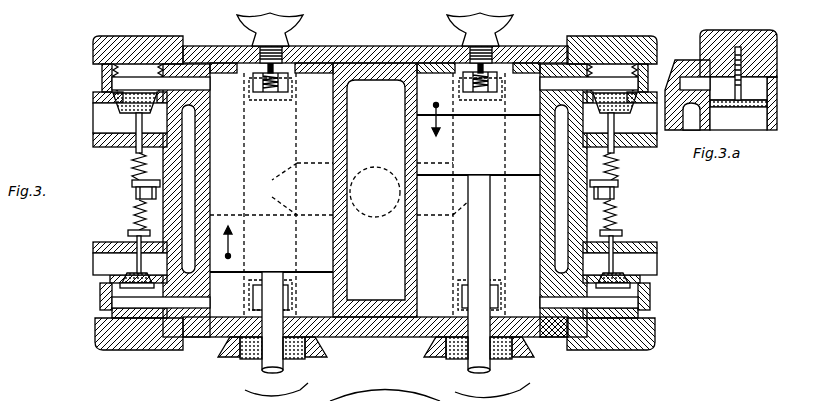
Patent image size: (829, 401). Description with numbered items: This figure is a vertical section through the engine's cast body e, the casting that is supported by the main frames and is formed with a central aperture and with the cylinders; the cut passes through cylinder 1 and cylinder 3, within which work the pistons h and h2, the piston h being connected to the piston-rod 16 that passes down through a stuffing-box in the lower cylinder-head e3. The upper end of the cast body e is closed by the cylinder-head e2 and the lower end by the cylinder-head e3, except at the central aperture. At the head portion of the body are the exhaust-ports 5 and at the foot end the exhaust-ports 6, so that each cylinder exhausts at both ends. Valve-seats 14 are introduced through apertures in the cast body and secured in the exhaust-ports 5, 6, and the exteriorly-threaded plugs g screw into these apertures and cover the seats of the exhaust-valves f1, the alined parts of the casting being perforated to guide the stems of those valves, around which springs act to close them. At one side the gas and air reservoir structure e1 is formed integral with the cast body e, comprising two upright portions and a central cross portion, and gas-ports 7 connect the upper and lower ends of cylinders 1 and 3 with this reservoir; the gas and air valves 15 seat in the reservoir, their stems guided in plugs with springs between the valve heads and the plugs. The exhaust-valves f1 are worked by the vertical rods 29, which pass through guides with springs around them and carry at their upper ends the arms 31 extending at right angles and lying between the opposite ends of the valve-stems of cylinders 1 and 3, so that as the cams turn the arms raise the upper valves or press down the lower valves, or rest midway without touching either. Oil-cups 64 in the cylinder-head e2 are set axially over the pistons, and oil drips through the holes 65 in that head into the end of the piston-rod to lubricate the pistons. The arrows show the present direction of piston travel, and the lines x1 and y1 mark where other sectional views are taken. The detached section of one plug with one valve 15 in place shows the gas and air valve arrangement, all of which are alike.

In FIG. 3, the plug g is at (143, 36).
In FIG. 3A, the plug g is at (750, 30).
In FIG. 3, the upper cylinder-head e2 is at (376, 46).
In FIG. 3, the lower cylinder-head e3 is at (402, 338).
In FIG. 3, the cast body e is at (132, 165).
In FIG. 3, the gas and air reservoir structure e1 is at (296, 150).
In FIG. 3A, the gas and air reservoir structure e1 is at (780, 115).
In FIG. 3, the section line x' x' x1 is at (666, 60).
In FIG. 3, the section line y' y' y1 is at (692, 296).
In FIG. 3, the upper exhaust-port 5 is at (196, 86).
In FIG. 3, the lower exhaust-port 6 is at (196, 300).
In FIG. 3, the gas-port 7 is at (283, 87).
In FIG. 3A, the gas-port 7 is at (695, 83).
In FIG. 3, the valve-seat 14 is at (116, 110).
In FIG. 3, the exhaust-valve f1 is at (612, 285).
In FIG. 3, the arm 31 is at (132, 184).
In FIG. 3, the vertical rod 29 is at (133, 222).
In FIG. 3, the piston h is at (271, 195).
In FIG. 3, the piston h2 is at (478, 195).
In FIG. 3, the cylinder 1 is at (256, 129).
In FIG. 3, the cylinder 3 is at (519, 215).
In FIG. 3A, the cylinder 3 is at (738, 118).
In FIG. 3, the gas and air valve 15 is at (270, 95).
In FIG. 3A, the gas and air valve 15 is at (745, 87).
In FIG. 3, the piston-rod 16 is at (376, 274).
In FIG. 3, the oil-cup 64 is at (290, 30).
In FIG. 3, the hole 65 is at (243, 46).